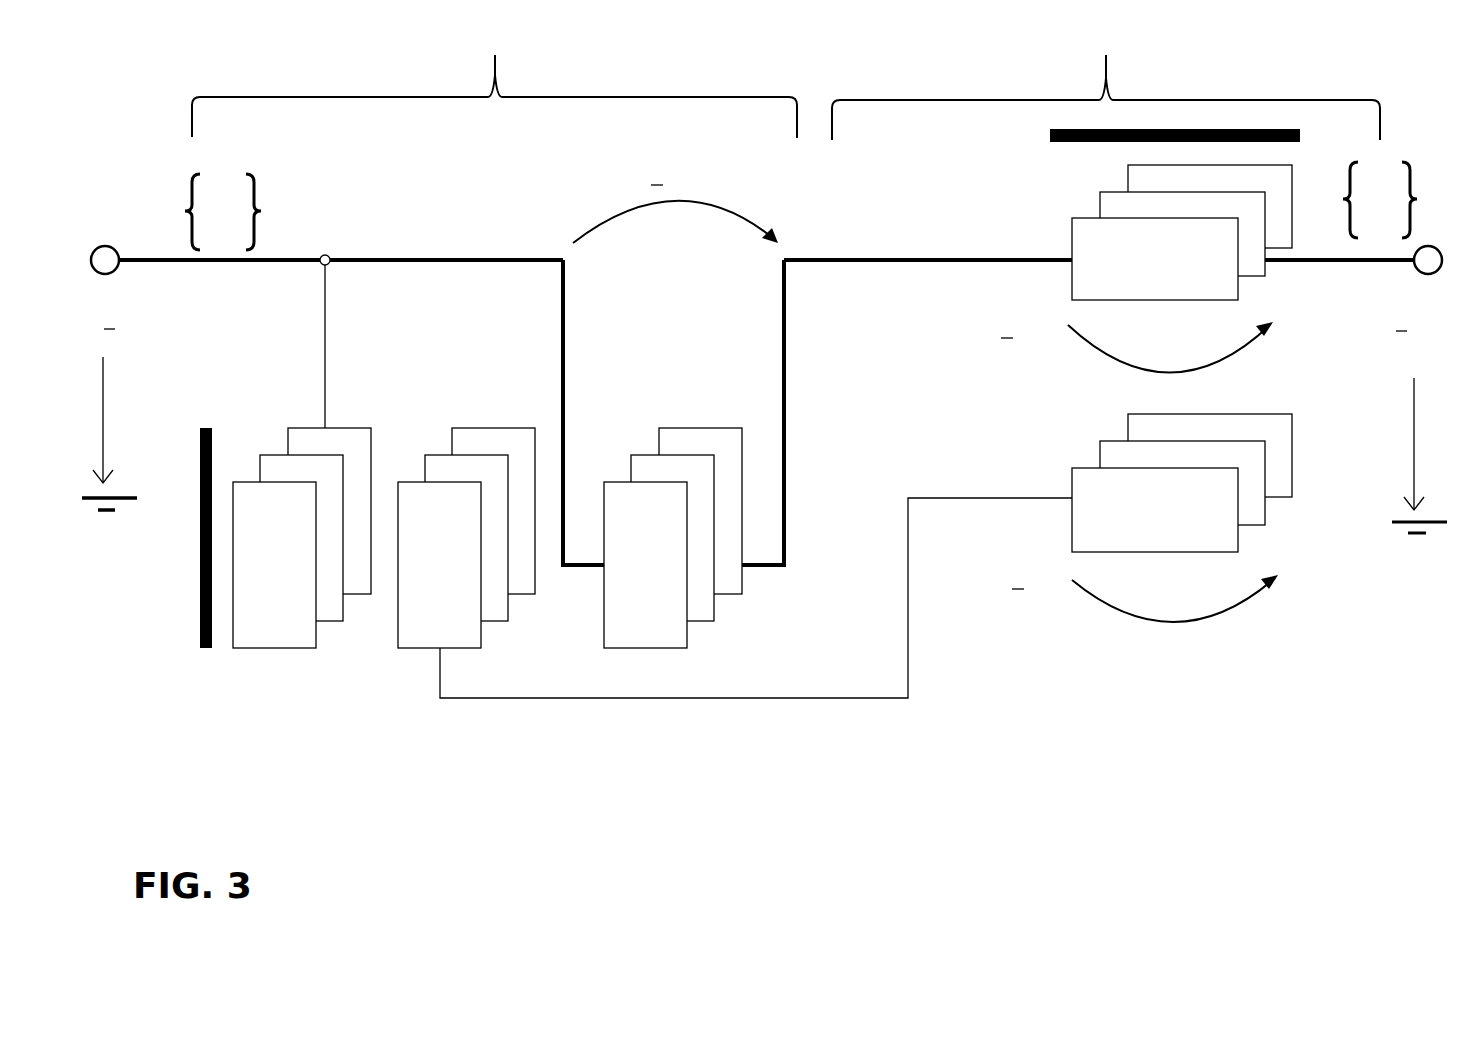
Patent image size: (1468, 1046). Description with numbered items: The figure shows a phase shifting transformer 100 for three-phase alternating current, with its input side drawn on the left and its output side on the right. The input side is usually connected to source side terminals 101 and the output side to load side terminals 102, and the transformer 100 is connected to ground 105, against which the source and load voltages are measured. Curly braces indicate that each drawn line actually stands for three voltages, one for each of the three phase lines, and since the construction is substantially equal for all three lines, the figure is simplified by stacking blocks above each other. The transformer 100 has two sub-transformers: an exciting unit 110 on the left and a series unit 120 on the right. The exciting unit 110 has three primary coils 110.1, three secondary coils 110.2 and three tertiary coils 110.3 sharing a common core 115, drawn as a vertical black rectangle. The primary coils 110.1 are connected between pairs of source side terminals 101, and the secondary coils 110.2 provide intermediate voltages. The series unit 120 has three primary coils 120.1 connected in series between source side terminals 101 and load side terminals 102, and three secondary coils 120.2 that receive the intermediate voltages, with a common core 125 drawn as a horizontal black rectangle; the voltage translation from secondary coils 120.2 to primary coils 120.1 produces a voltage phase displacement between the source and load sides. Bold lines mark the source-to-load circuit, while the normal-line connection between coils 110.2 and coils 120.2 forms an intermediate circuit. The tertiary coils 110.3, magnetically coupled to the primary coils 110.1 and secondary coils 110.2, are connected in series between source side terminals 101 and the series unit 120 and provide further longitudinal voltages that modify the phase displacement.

The phase shifting transformer 100 is at (827, 837).
The source side terminals 101 is at (112, 239).
The load side terminals 102 is at (1434, 245).
The ground 105 is at (123, 500).
The exciting unit 110 is at (494, 338).
The primary coils 110.1 is at (302, 538).
The secondary coils 110.2 is at (466, 538).
The tertiary coils 110.3 is at (673, 538).
The core 115 is at (225, 524).
The series unit 120 is at (1106, 290).
The primary coils 120.1 is at (1182, 232).
The secondary coils 120.2 is at (1182, 483).
The core 125 is at (1084, 148).